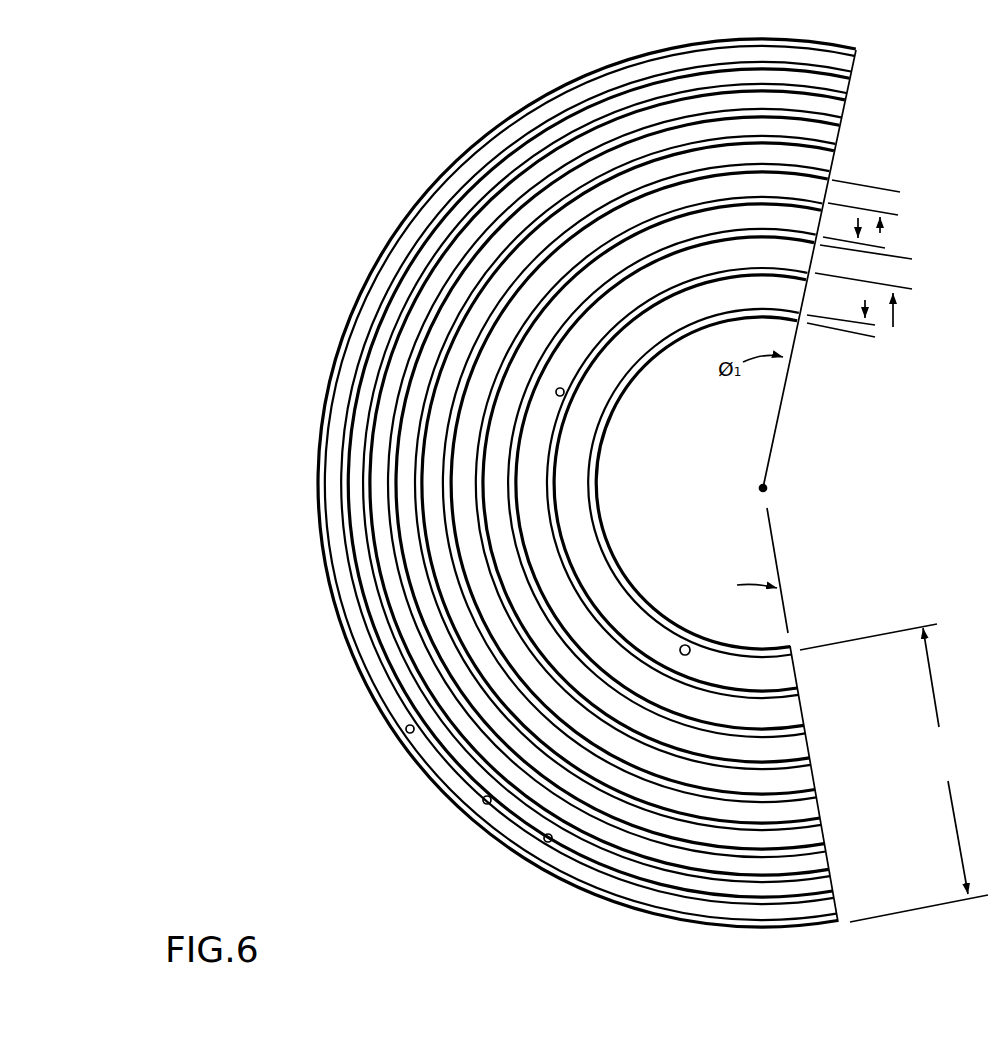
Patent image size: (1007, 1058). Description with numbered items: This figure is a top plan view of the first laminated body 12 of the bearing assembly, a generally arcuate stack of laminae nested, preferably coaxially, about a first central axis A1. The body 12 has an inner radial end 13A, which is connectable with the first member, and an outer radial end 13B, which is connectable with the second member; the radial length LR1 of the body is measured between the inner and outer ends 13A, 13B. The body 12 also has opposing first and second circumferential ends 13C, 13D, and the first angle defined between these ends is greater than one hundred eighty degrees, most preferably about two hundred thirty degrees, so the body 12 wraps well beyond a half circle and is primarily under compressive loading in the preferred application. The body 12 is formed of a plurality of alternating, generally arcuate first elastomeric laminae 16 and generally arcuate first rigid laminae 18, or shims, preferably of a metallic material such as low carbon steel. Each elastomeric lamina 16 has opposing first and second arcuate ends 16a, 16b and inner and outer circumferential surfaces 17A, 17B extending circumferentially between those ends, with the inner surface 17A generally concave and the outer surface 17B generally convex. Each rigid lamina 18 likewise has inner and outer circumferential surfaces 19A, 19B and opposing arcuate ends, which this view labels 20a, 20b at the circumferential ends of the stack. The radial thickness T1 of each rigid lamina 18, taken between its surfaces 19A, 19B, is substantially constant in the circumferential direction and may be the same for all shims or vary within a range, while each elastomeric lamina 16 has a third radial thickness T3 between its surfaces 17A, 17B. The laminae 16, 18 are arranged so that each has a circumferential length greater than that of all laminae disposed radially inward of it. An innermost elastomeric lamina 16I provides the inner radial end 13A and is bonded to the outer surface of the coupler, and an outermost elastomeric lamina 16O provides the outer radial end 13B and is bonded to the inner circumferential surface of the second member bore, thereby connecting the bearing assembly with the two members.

The first laminated body 12 is at (282, 220).
The inner radial end 13A is at (615, 542).
The outer radial end 13B is at (320, 550).
The first circumferential end 13C is at (822, 787).
The second circumferential end 13D is at (863, 72).
The first elastomeric laminae 16 is at (393, 343).
The outermost elastomeric lamina 16O is at (322, 473).
The innermost elastomeric lamina 16I is at (600, 497).
The first arcuate end 16a is at (797, 653).
The second arcuate end 16b is at (843, 97).
The inner circumferential surface 17A is at (406, 730).
The outer circumferential surface 17B is at (410, 753).
The first rigid laminae 18 is at (417, 322).
The inner circumferential surface 19A is at (493, 807).
The outer circumferential surface 19B is at (460, 797).
The first end of adhesive layer 20a is at (792, 680).
The second end of adhesive layer 20b is at (847, 85).
The first radial thickness T1 is at (888, 185).
The third radial thickness T3 is at (853, 255).
The first central axis A1 is at (772, 462).
The radial length LR1 is at (894, 773).